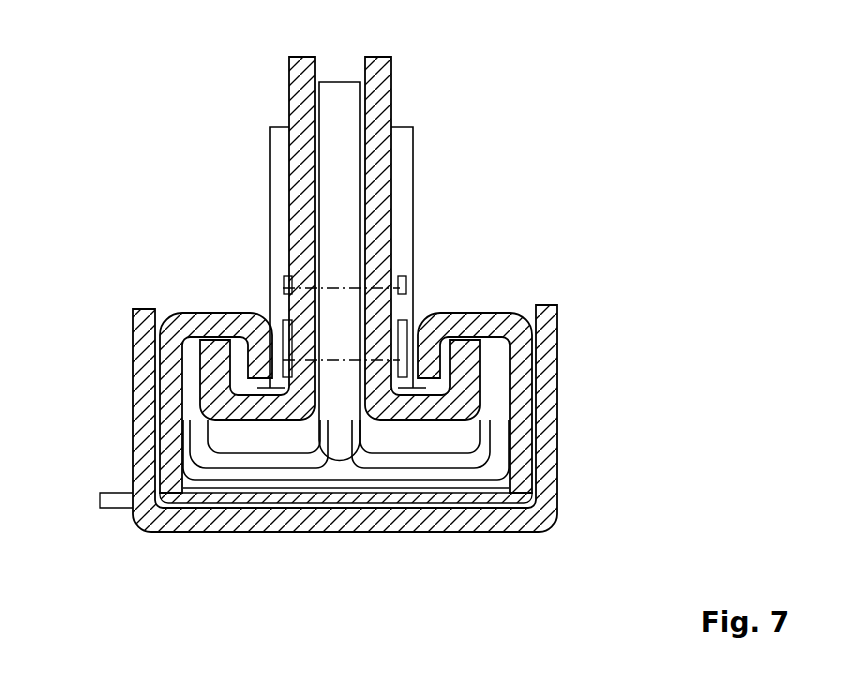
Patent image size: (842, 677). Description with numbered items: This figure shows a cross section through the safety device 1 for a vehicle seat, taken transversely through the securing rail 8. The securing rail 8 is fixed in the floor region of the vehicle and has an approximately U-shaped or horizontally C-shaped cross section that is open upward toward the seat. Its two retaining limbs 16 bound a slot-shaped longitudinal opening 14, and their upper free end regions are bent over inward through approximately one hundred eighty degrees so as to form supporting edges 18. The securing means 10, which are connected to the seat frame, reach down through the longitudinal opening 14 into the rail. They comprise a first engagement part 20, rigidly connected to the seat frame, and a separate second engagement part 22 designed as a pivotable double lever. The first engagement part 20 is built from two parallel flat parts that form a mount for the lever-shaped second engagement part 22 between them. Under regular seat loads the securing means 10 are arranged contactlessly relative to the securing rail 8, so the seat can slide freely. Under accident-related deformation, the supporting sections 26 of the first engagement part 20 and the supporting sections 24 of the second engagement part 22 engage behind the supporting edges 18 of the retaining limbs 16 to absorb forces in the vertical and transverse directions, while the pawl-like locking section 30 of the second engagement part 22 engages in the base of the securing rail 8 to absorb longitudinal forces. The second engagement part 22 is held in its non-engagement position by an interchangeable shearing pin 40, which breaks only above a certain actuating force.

The safety device 1 is at (522, 238).
The securing rail 8 is at (150, 530).
The securing means 10 is at (203, 410).
The slot-shaped longitudinal opening 14 is at (289, 360).
The retaining limbs 16 is at (133, 330).
The supporting edges 18 is at (213, 318).
The first engagement part 20 is at (293, 409).
The second engagement part 22 is at (350, 402).
The supporting sections 24 is at (470, 420).
The supporting sections 26 is at (500, 343).
The locking section 30 is at (330, 470).
The shearing pin 40 is at (415, 290).